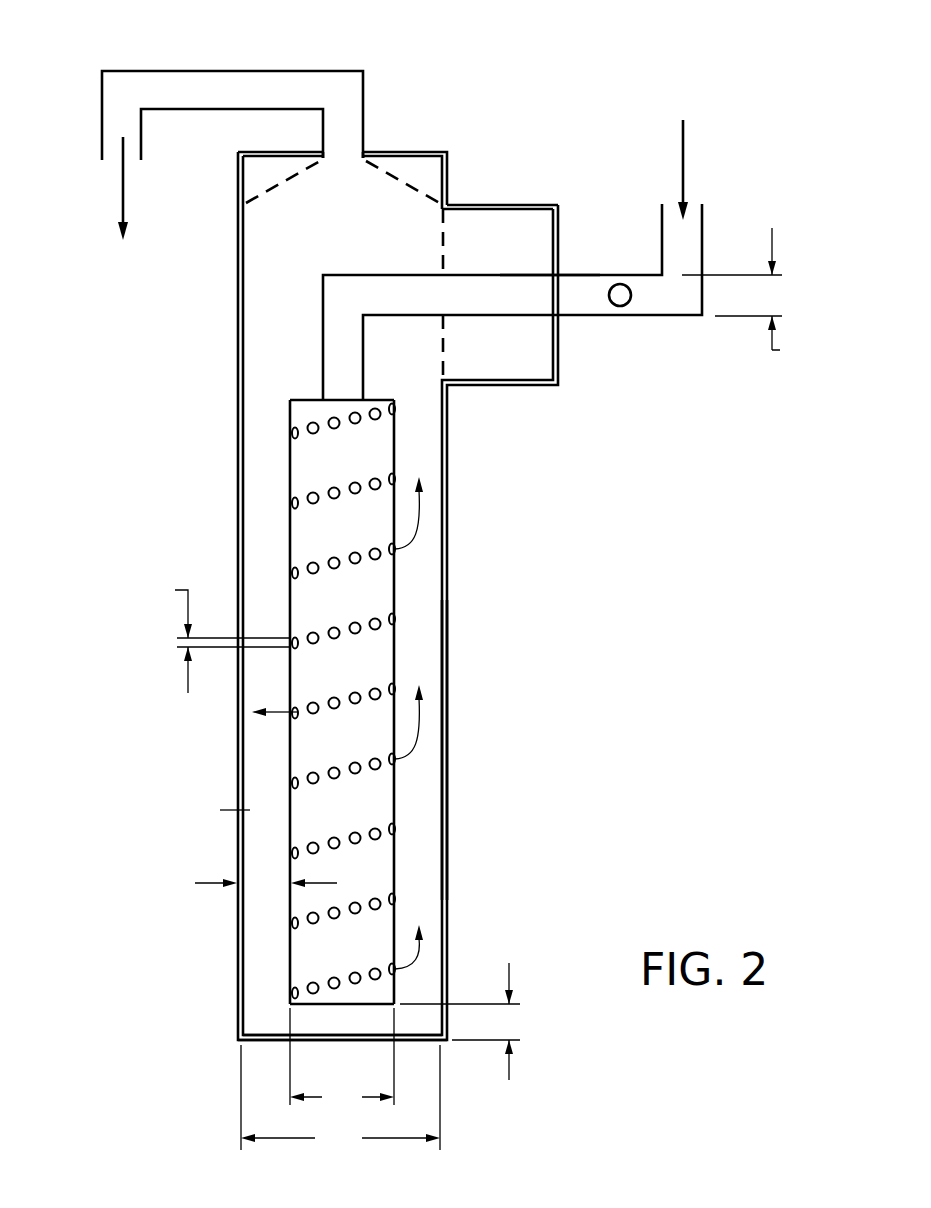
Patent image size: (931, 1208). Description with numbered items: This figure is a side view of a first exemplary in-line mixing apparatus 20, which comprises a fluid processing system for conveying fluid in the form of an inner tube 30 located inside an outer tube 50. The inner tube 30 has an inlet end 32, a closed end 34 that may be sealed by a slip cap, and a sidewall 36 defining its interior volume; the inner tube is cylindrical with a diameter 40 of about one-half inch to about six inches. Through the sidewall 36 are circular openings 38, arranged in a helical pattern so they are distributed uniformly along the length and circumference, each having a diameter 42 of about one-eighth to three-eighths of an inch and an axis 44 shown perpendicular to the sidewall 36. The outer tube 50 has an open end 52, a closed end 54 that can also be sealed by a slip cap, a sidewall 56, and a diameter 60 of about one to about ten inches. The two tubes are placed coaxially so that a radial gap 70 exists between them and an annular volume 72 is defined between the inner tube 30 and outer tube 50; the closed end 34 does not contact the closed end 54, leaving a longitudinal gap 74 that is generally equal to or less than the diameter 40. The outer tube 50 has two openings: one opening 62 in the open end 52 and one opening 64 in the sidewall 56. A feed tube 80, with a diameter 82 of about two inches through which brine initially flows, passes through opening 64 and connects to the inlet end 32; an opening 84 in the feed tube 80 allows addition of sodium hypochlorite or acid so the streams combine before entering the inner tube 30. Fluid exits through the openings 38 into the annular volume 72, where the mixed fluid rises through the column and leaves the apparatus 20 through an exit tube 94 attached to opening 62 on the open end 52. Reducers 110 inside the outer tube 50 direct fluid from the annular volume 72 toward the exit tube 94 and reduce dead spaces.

The in-line mixing apparatus 20 is at (423, 586).
The inner tube 30 is at (359, 703).
The inlet end 32 is at (306, 398).
The closed end 34 is at (353, 1007).
The sidewall 36 is at (291, 470).
The openings 38 is at (296, 571).
The diameter 40 is at (342, 1058).
The diameter 42 is at (217, 636).
The axis 44 is at (274, 698).
The outer tube 50 is at (352, 620).
The open end 52 is at (475, 205).
The closed end 54 is at (262, 1042).
The sidewall 56 is at (448, 793).
The diameter 60 is at (340, 1097).
The opening 62 is at (342, 153).
The opening 64 is at (555, 297).
The radial gap 70 is at (225, 896).
The annular volume 72 is at (278, 819).
The longitudinal gap 74 is at (462, 1021).
The feed tube 80 is at (564, 306).
The diameter 82 is at (749, 299).
The opening 84 is at (612, 305).
The exit tube 94 is at (300, 71).
The reducers 110 is at (272, 188).